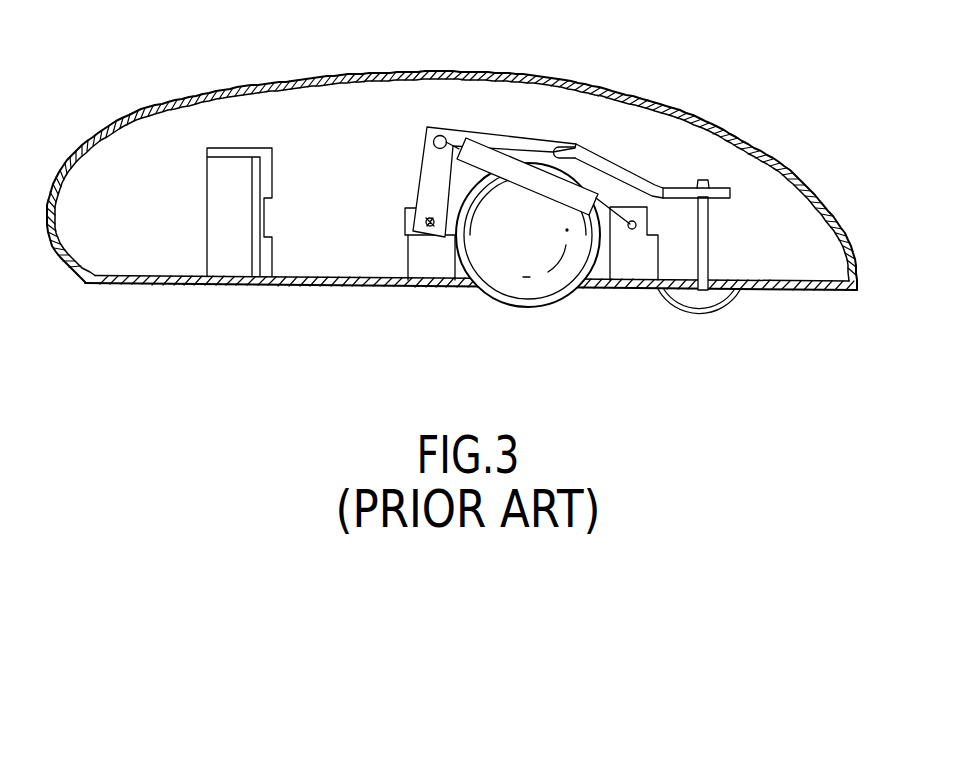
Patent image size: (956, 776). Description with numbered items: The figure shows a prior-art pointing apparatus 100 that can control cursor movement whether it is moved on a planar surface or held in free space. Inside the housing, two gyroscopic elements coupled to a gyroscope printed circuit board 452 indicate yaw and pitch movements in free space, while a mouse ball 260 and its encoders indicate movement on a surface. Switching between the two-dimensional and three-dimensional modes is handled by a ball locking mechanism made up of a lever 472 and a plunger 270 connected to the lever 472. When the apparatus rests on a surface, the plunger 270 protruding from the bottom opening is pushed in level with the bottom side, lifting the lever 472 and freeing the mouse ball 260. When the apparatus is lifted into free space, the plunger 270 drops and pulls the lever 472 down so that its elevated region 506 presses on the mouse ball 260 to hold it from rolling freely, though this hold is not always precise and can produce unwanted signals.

The pointing apparatus 100 is at (518, 72).
The gyroscope printed circuit board 452 is at (258, 218).
The lever 472 is at (473, 127).
The elevated region 506 is at (578, 146).
The mouse ball 260 is at (560, 300).
The plunger 270 is at (727, 308).